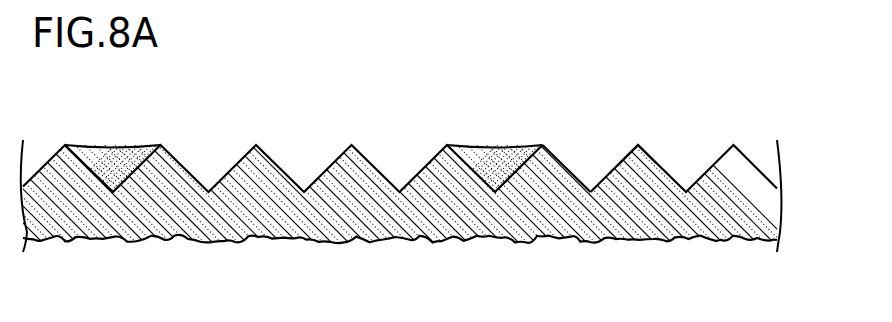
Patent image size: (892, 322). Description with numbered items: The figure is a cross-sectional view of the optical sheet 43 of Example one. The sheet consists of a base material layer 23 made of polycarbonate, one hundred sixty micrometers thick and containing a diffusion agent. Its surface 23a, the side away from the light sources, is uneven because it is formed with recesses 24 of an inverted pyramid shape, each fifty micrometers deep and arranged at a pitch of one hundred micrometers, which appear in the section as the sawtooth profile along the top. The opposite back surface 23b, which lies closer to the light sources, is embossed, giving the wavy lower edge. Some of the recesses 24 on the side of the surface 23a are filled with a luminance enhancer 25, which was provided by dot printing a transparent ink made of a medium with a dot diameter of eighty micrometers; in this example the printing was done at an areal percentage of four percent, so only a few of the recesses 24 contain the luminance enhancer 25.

The base material layer 23 is at (757, 209).
The surface 23a is at (660, 163).
The back surface 23b is at (640, 240).
The recess 24 is at (590, 162).
The luminance enhancer 25 is at (493, 160).
The optical sheet 43 is at (653, 113).